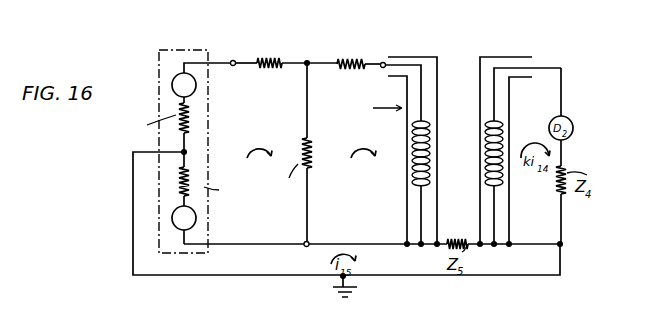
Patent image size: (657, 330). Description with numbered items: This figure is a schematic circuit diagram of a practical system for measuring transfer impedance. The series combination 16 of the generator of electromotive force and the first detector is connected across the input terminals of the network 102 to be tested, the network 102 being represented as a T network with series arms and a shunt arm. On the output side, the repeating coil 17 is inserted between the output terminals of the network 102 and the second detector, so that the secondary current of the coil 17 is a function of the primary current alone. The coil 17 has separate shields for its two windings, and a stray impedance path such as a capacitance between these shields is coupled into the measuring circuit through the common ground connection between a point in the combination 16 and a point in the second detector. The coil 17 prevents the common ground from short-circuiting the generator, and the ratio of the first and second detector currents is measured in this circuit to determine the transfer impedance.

The series combination of generator and first detector 16 is at (197, 49).
The network to be tested 102 is at (333, 43).
The repeating coil 17 is at (473, 118).